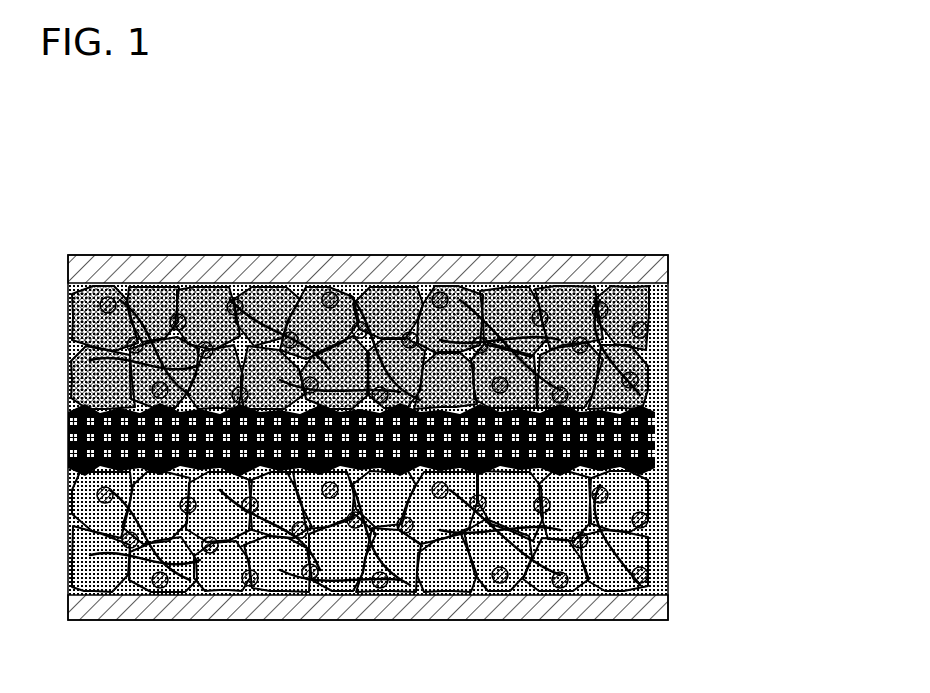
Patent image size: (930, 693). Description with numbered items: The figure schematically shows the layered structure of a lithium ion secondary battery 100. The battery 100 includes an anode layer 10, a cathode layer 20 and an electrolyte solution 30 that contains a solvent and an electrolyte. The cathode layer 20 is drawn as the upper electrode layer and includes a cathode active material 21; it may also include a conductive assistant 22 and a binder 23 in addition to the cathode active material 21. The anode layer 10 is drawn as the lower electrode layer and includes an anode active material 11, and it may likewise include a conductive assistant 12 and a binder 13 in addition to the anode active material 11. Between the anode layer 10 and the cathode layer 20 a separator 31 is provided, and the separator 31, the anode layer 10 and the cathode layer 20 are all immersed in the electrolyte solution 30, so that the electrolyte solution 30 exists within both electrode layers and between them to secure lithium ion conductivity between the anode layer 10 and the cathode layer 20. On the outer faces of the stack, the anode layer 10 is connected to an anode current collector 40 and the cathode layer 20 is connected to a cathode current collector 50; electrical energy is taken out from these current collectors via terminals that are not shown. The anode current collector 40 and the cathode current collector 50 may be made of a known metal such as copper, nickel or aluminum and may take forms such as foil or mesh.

The lithium ion secondary battery 100 is at (383, 186).
The cathode current collector 50 is at (668, 265).
The cathode layer 20 is at (427, 347).
The cathode active material 21 is at (632, 288).
The conductive assistant 22 is at (660, 389).
The binder 23 is at (666, 330).
The electrolyte solution 30 is at (433, 439).
The separator 31 is at (666, 424).
The anode layer 10 is at (427, 529).
The anode active material 11 is at (650, 486).
The conductive assistant 12 is at (650, 571).
The binder 13 is at (666, 511).
The anode current collector 40 is at (660, 610).